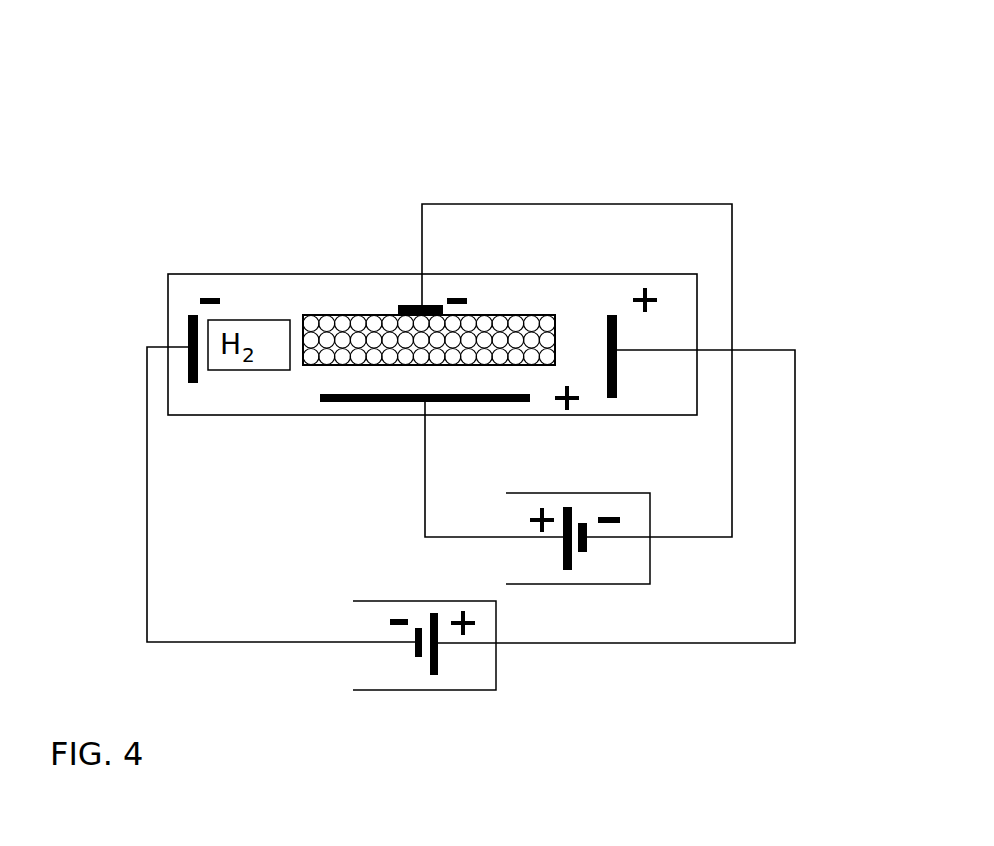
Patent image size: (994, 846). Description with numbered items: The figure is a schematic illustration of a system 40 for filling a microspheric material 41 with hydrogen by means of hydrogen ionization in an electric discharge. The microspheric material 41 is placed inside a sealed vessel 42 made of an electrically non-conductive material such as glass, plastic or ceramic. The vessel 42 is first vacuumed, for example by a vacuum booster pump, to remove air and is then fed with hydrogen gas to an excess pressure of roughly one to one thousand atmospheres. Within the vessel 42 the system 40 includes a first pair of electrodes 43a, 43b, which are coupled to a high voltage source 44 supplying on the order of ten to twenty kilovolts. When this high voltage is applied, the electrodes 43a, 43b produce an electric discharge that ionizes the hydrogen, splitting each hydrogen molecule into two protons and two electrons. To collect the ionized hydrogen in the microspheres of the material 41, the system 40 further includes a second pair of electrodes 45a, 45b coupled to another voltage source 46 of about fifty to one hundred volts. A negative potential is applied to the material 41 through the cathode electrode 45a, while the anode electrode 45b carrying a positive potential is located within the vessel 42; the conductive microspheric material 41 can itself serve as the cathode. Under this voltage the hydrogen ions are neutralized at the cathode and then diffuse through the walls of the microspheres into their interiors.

The system 40 is at (683, 135).
The microspheric material 41 is at (332, 316).
The sealed vessel 42 is at (247, 275).
The first electrode 43a is at (188, 328).
The second electrode 43b is at (610, 314).
The high voltage source 44 is at (353, 681).
The cathode electrode 45a is at (409, 306).
The anode electrode 45b is at (346, 403).
The voltage source 46 is at (647, 558).